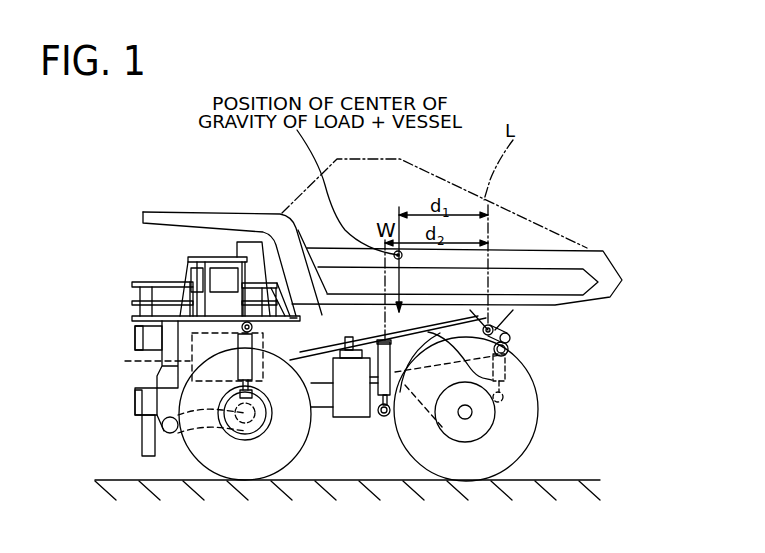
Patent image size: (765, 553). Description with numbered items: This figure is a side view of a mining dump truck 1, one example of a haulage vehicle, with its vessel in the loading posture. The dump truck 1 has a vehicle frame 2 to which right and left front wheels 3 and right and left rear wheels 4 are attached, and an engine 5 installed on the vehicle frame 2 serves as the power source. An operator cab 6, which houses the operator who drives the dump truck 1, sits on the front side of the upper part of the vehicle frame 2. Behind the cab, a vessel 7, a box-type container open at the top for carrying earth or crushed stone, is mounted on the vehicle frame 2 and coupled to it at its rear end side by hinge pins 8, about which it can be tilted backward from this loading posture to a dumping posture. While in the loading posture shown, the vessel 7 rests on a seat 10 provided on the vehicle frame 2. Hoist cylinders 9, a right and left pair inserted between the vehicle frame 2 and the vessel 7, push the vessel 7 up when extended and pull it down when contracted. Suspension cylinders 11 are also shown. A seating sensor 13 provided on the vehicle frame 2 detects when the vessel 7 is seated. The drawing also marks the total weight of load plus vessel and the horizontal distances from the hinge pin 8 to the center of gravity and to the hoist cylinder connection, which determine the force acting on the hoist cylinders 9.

The dump truck 1 is at (186, 204).
The vehicle frame 2 is at (325, 380).
The front wheels 3 is at (250, 467).
The rear wheels 4 is at (470, 462).
The engine 5 is at (148, 350).
The operator cab 6 is at (222, 302).
The vessel 7 is at (515, 258).
The hinge pins 8 is at (500, 324).
The hoist cylinders 9 is at (400, 408).
The seat 10 is at (506, 352).
The suspension cylinders 11 is at (505, 362).
The seating sensor 13 is at (345, 360).